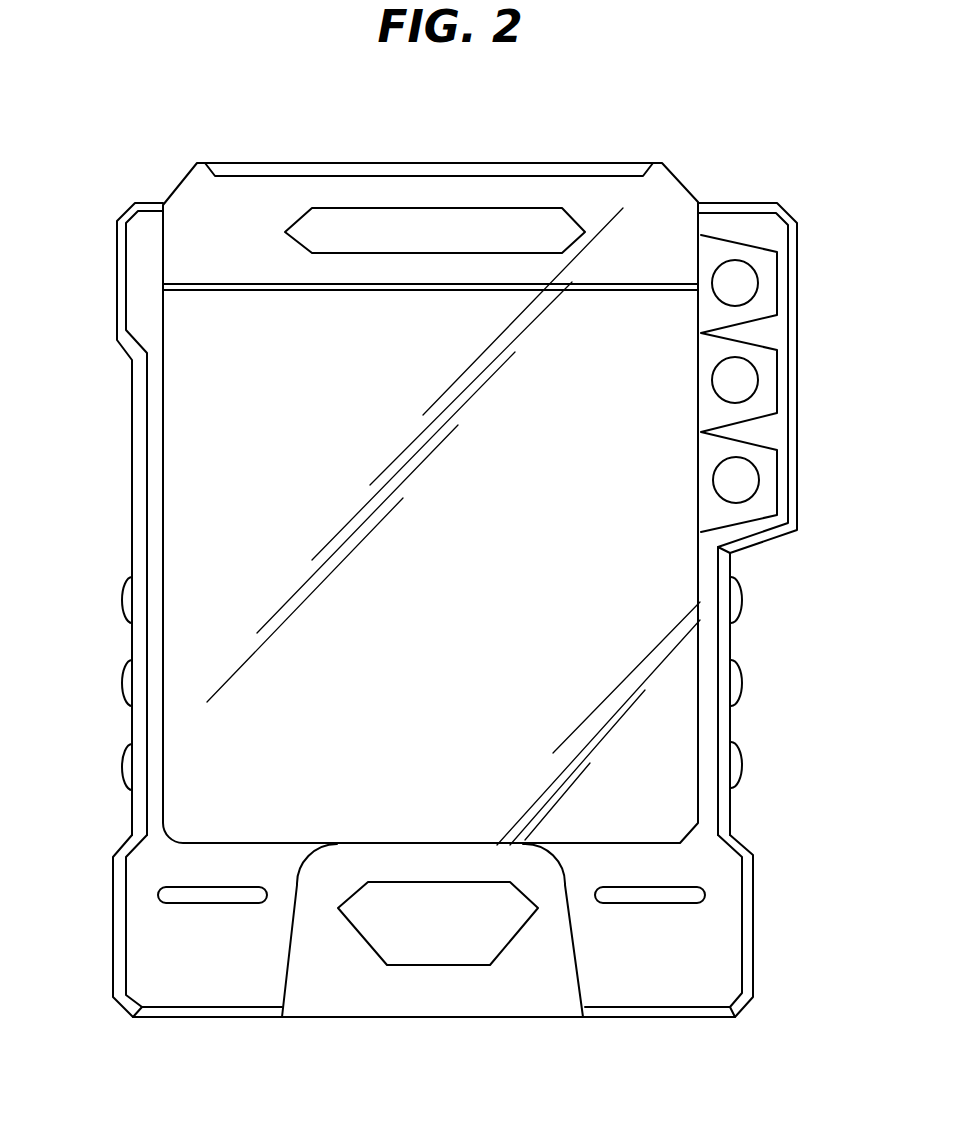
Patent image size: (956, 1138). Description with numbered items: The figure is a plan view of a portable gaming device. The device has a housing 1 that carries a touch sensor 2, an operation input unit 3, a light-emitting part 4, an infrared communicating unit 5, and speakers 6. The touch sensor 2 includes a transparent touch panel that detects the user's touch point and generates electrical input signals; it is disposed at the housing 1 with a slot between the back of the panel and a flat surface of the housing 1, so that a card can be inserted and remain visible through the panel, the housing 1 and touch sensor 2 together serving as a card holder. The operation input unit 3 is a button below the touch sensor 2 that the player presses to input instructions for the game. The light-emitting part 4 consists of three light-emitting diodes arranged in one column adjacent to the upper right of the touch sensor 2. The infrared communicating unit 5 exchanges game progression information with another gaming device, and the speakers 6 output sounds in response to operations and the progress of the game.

The housing 1 is at (742, 202).
The touch sensor 2 is at (675, 728).
The operation input unit 3 is at (427, 953).
The light-emitting part 4 is at (747, 475).
The infrared communicating unit 5 is at (447, 165).
The speakers 6 is at (158, 893).